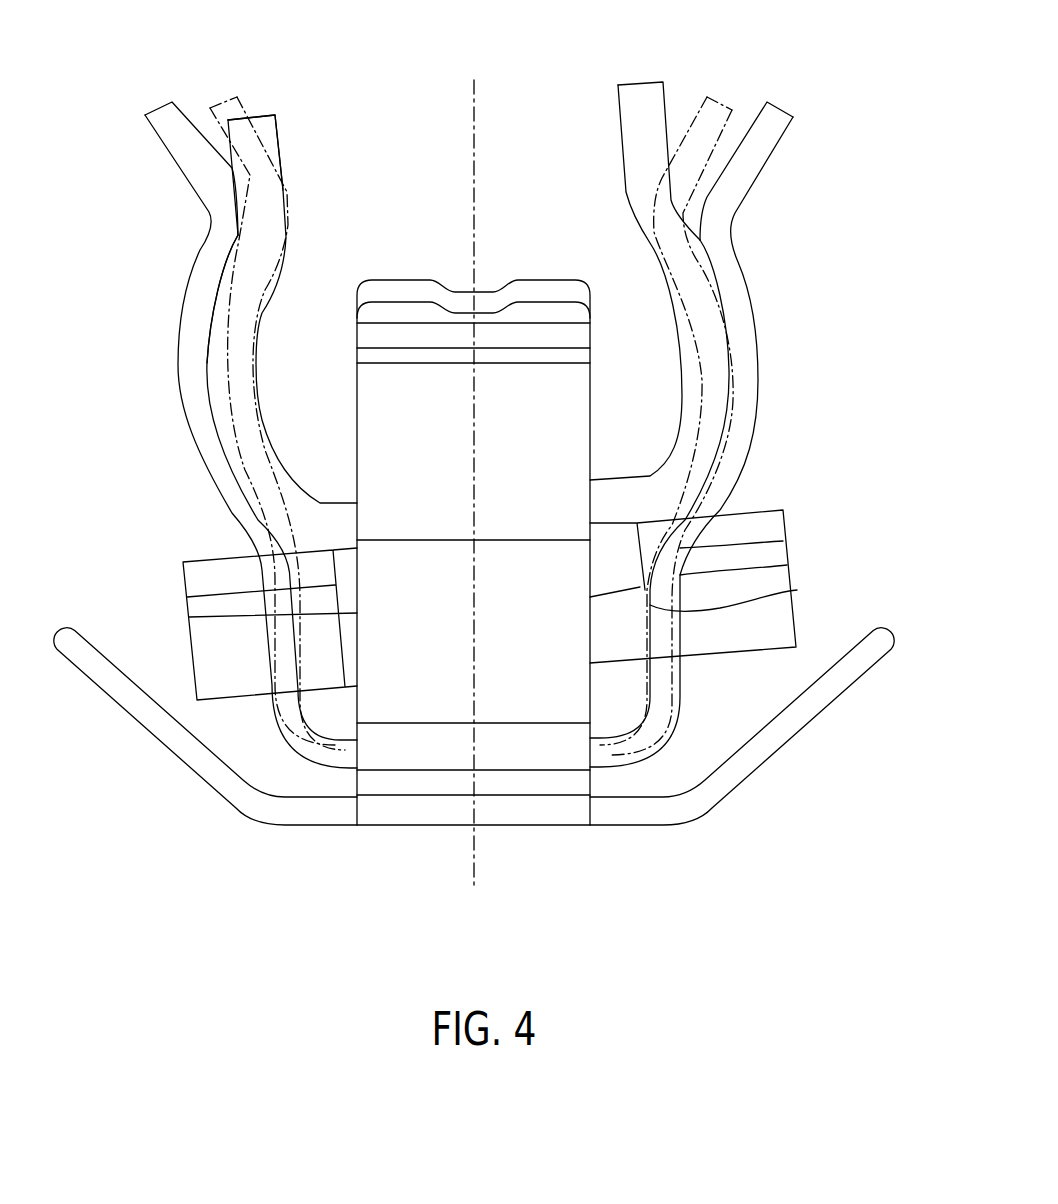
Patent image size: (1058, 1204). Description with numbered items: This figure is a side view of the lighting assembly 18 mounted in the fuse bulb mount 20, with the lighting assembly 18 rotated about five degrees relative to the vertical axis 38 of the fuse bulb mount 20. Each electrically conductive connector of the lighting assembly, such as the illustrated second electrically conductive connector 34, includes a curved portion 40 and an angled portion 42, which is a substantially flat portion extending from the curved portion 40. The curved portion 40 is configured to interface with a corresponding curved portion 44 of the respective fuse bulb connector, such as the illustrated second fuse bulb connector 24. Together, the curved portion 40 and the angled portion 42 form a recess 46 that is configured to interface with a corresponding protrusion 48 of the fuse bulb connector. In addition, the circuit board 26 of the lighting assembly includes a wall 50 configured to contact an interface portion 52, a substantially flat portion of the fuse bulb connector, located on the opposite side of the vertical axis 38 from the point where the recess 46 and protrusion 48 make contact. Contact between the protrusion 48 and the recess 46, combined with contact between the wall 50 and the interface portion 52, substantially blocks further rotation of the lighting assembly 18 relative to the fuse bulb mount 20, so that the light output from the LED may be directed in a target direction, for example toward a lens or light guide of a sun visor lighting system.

The lighting assembly 18 is at (474, 457).
The fuse bulb mount 20 is at (782, 782).
The second fuse bulb connector 24 is at (495, 435).
The circuit board 26 is at (523, 602).
The second electrically conductive connector 34 is at (727, 347).
The vertical axis 38 is at (474, 163).
The curved portion 40 is at (282, 309).
The angled portion 42 is at (232, 170).
The curved portion 44 is at (208, 353).
The recess 46 is at (240, 232).
The protrusion 48 is at (238, 238).
The wall 50 is at (783, 515).
The interface portion 52 is at (797, 590).